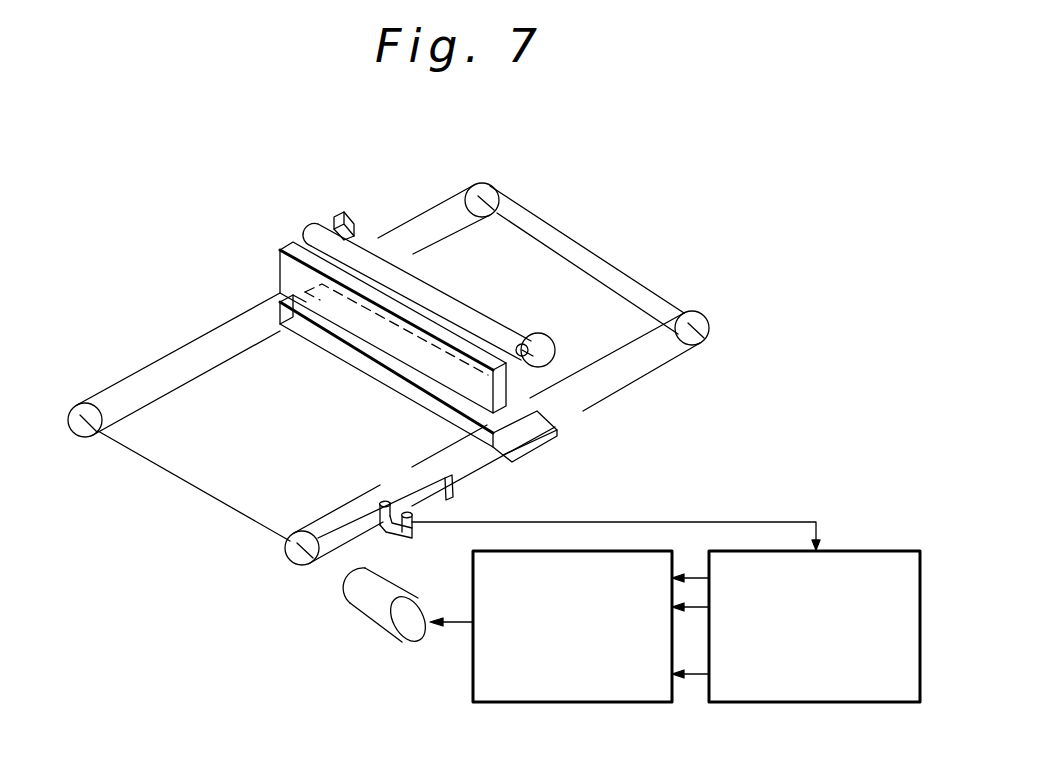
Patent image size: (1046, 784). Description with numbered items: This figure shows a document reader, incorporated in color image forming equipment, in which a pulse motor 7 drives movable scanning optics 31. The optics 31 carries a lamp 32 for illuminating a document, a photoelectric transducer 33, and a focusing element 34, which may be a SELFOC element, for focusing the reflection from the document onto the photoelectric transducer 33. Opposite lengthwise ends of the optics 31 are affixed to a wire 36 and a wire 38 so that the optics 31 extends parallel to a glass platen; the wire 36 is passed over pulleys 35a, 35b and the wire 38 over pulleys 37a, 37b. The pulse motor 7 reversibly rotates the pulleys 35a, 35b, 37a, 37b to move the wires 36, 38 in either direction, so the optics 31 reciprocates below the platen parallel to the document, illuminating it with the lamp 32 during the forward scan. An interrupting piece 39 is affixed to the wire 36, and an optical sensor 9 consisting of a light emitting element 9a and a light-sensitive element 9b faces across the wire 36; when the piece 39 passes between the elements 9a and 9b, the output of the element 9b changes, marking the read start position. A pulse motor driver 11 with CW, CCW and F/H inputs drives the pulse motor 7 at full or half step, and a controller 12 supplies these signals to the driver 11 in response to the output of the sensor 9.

The movable scanning optics 31 is at (305, 212).
The lamp 32 is at (352, 226).
The photoelectric transducer 33 is at (276, 318).
The focusing element 34 is at (279, 252).
The pulley 35a is at (297, 566).
The pulley 35b is at (707, 328).
The wire 36 is at (334, 514).
The pulley 37a is at (84, 438).
The pulley 37b is at (490, 190).
The wire 38 is at (152, 372).
The interrupting piece 39 is at (440, 478).
The optical sensor 9 is at (407, 545).
The light emitting element 9a is at (384, 504).
The light-sensitive element 9b is at (416, 512).
The pulse motor 7 is at (366, 618).
The pulse motor driver 11 is at (574, 705).
The controller 12 is at (810, 705).